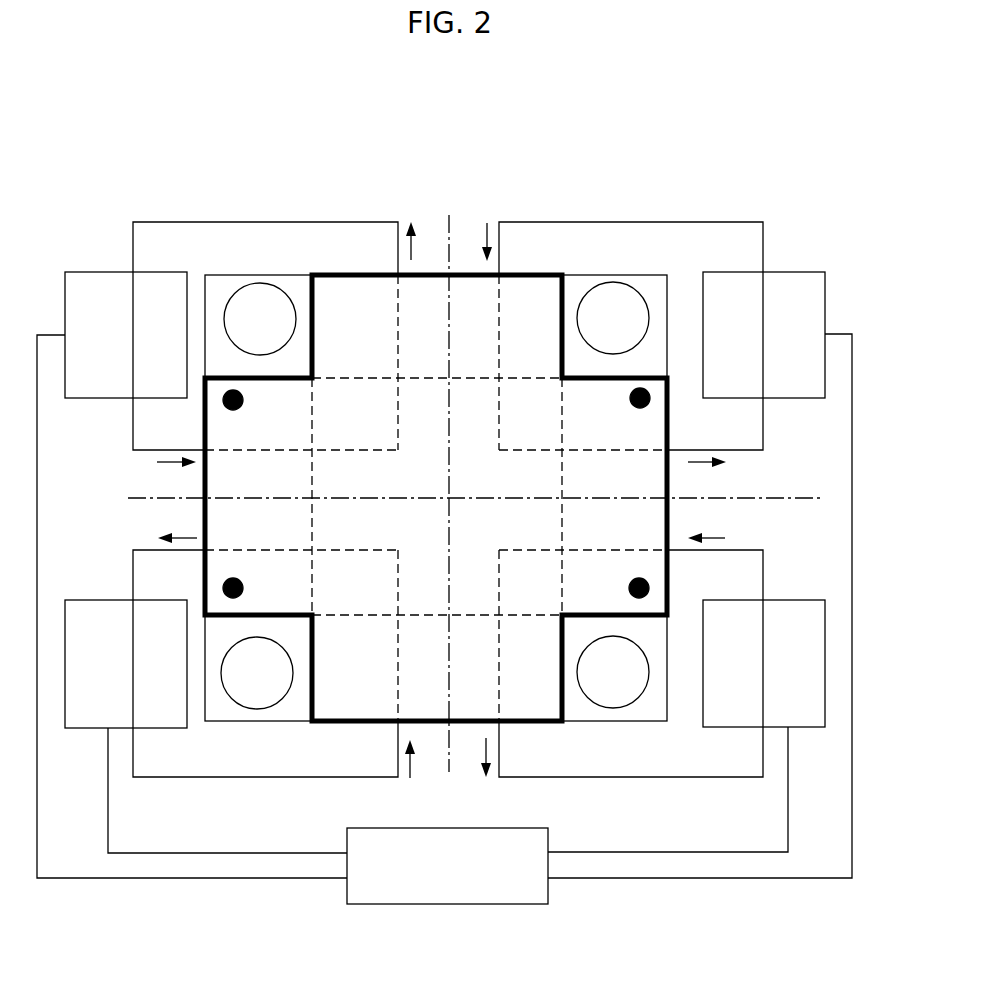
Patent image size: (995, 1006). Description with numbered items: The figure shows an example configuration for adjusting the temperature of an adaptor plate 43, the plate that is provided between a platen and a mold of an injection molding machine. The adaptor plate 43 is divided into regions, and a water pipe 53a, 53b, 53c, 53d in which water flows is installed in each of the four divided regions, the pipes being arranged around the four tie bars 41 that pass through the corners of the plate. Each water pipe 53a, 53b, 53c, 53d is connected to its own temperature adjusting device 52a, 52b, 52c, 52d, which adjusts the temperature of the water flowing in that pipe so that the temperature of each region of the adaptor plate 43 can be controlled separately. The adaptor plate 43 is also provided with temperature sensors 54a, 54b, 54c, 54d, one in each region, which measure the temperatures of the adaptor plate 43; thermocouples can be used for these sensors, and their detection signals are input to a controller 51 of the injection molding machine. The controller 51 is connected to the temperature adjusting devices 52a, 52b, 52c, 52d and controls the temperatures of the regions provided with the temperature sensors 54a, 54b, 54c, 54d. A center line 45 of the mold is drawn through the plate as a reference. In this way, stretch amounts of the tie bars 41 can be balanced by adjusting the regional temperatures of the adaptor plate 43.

The tie bar 41 is at (248, 283).
The adaptor plate 43 is at (462, 273).
The center line 45 is at (447, 747).
The controller 51 is at (460, 904).
The temperature adjusting device 52a is at (108, 272).
The temperature adjusting device 52b is at (792, 270).
The temperature adjusting device 52c is at (98, 728).
The temperature adjusting device 52d is at (798, 727).
The water pipe 53a is at (247, 222).
The water pipe 53b is at (662, 222).
The water pipe 53c is at (220, 777).
The water pipe 53d is at (650, 778).
The temperature sensor 54a is at (233, 400).
The temperature sensor 54b is at (648, 400).
The temperature sensor 54c is at (225, 587).
The temperature sensor 54d is at (648, 587).